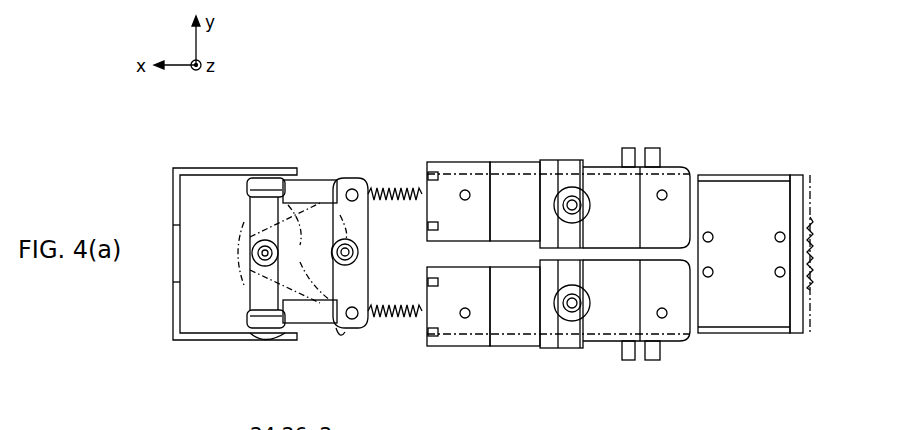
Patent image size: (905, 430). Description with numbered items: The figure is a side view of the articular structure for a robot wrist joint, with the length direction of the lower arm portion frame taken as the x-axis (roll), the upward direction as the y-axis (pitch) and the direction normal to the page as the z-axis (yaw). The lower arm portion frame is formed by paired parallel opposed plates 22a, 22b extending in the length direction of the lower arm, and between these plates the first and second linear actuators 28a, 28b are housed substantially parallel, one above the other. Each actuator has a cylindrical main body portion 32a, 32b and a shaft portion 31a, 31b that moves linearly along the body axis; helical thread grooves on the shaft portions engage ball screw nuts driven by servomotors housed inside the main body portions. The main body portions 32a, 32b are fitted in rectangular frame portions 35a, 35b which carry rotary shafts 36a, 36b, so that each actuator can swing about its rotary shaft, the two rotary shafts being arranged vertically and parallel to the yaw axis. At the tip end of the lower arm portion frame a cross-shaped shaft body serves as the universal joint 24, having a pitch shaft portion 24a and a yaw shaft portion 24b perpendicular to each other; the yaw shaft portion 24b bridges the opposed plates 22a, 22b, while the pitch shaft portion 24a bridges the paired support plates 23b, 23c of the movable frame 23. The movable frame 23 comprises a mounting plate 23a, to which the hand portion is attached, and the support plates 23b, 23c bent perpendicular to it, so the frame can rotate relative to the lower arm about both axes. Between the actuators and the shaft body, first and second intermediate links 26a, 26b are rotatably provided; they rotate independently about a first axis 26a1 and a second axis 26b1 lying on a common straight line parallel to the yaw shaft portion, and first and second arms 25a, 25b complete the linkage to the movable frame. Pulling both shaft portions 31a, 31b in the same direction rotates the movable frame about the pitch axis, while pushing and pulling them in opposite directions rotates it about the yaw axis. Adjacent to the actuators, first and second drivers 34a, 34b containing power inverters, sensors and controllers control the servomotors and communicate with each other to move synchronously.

The movable frame 23 is at (173, 170).
The mounting plate 23a is at (172, 310).
The support plate 23b is at (203, 168).
The support plate 23c is at (206, 341).
The universal joint 24 is at (271, 204).
The pitch shaft portion 24a is at (250, 179).
The yaw shaft portion 24b is at (283, 178).
The first arm 25a is at (318, 190).
The second arm 25b is at (310, 325).
The first intermediate link 26a is at (348, 185).
The second intermediate link 26b is at (348, 332).
The first axis 26a1 is at (357, 188).
The second axis 26b1 is at (352, 313).
The shaft portion 31a is at (395, 188).
The shaft portion 31b is at (395, 318).
The opposed plate 22a is at (428, 170).
The opposed plate 22b is at (473, 347).
The first linear actuator 28a is at (515, 163).
The second linear actuator 28b is at (520, 347).
The rectangular frame portion 35a is at (555, 161).
The rectangular frame portion 35b is at (573, 349).
The rotary shaft 36a is at (580, 192).
The rotary shaft 36b is at (583, 308).
The main body portion 32a is at (610, 168).
The main body portion 32b is at (610, 345).
The first driver 34a is at (722, 205).
The second driver 34b is at (801, 254).